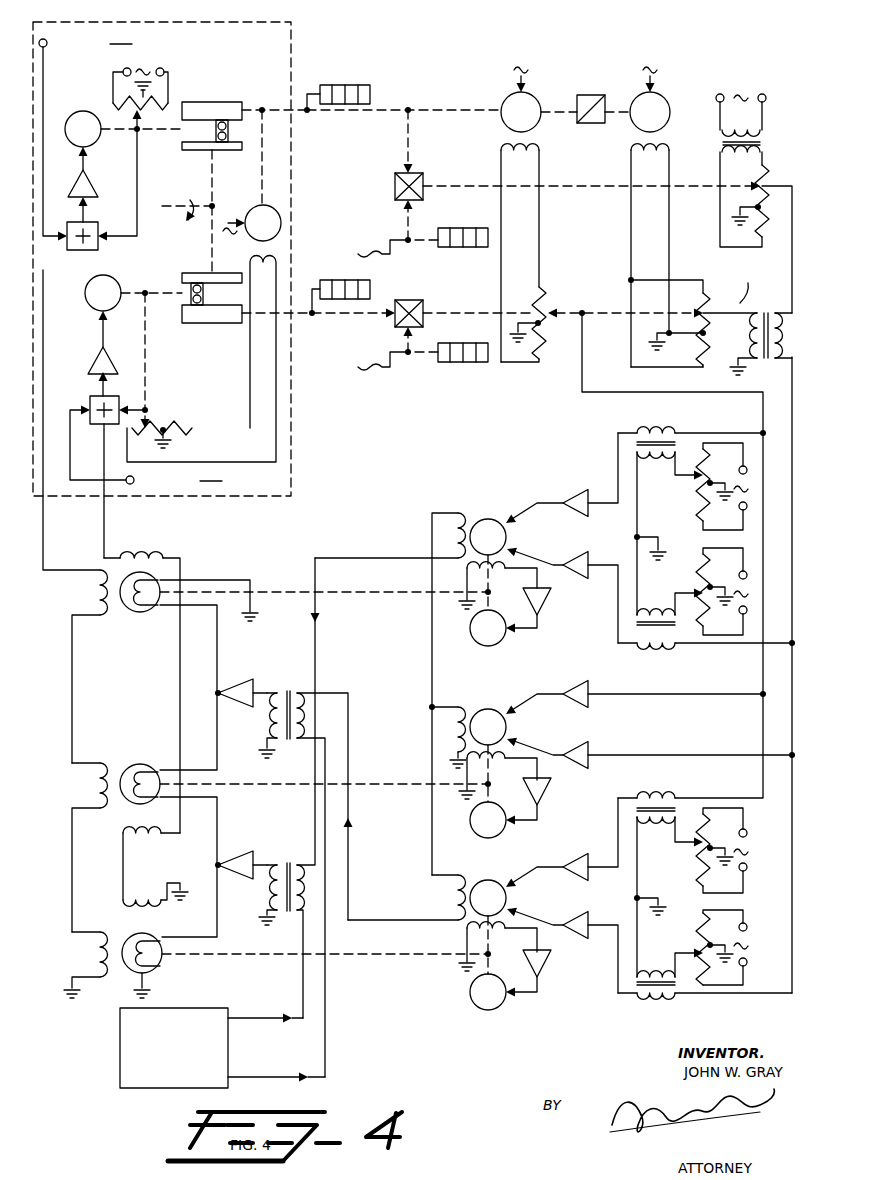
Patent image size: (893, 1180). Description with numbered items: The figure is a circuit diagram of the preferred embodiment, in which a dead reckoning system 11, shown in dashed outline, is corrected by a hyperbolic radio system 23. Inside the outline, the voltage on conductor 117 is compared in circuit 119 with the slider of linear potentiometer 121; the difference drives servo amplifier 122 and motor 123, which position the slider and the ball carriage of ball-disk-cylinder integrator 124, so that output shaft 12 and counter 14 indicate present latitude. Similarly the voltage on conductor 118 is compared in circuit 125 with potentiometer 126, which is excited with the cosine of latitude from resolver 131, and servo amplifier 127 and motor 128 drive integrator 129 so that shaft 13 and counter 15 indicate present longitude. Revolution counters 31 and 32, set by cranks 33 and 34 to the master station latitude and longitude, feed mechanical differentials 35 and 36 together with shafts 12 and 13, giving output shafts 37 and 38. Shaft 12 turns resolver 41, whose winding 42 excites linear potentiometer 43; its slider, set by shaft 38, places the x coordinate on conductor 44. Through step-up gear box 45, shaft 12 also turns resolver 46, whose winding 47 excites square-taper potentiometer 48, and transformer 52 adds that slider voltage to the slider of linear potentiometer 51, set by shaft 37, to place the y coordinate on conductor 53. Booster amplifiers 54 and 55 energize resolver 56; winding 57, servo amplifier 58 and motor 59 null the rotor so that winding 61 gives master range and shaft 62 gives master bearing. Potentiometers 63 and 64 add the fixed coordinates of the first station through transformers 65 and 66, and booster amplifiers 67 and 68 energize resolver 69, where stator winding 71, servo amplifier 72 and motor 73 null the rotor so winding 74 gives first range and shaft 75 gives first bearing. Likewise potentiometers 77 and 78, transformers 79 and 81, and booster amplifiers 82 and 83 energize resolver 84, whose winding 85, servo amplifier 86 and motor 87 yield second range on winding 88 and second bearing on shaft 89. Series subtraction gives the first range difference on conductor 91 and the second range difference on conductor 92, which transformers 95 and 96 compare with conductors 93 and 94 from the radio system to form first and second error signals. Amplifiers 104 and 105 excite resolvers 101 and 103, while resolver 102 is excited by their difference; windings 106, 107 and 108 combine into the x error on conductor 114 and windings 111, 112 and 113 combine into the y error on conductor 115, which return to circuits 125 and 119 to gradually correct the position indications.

The dead reckoning system 11 is at (287, 52).
The conductor 117 is at (43, 105).
The circuit 119 is at (96, 232).
The servo amplifier 122 is at (92, 196).
The motor 123 is at (99, 140).
The linear potentiometer 121 is at (142, 114).
The ball-disk-cylinder integrator 124 is at (200, 103).
The resolver 131 is at (254, 209).
The motor 128 is at (87, 305).
The servo amplifier 127 is at (90, 362).
The circuit 125 is at (87, 408).
The potentiometer 126 is at (172, 426).
The integrator 129 is at (205, 323).
The conductor 118 is at (68, 468).
The output shaft 12 is at (470, 112).
The counter 14 is at (372, 99).
The mechanical differential 35 is at (395, 196).
The output shaft 37 is at (588, 190).
The revolution counter 31 is at (482, 228).
The crank 33 is at (371, 252).
The counter 15 is at (370, 290).
The output shaft 13 is at (326, 321).
The mechanical differential 36 is at (395, 327).
The revolution counter 32 is at (480, 345).
The crank 34 is at (371, 364).
The resolver 41 is at (511, 94).
The step-up gear box 45 is at (603, 95).
The resolver 46 is at (661, 97).
The winding 42 is at (538, 150).
The linear potentiometer 43 is at (548, 308).
The output shaft 38 is at (527, 315).
The winding 47 is at (666, 148).
The potentiometer 48 is at (708, 330).
The linear potentiometer 51 is at (762, 183).
The conductor 53 is at (790, 461).
The transformer 52 is at (768, 360).
The conductor 44 is at (618, 392).
The transformer 65 is at (672, 434).
The potentiometer 63 is at (698, 509).
The potentiometer 64 is at (701, 549).
The transformer 66 is at (673, 644).
The booster amplifier 67 is at (590, 502).
The booster amplifier 68 is at (592, 567).
The booster amplifier 54 is at (590, 688).
The booster amplifier 55 is at (590, 718).
The booster amplifier 82 is at (590, 867).
The booster amplifier 83 is at (592, 929).
The transformer 79 is at (672, 799).
The potentiometer 77 is at (700, 878).
The potentiometer 78 is at (700, 916).
The transformer 81 is at (673, 996).
The winding 74 is at (458, 513).
The resolver 69 is at (492, 518).
The shaft 75 is at (354, 592).
The stator winding 71 is at (471, 568).
The servo amplifier 72 is at (550, 601).
The motor 73 is at (491, 646).
The winding 61 is at (458, 703).
The resolver 56 is at (492, 709).
The shaft 62 is at (398, 785).
The winding 57 is at (469, 769).
The servo amplifier 58 is at (551, 795).
The motor 59 is at (491, 838).
The winding 88 is at (458, 875).
The resolver 84 is at (492, 880).
The shaft 89 is at (402, 954).
The stator winding 85 is at (471, 933).
The servo amplifier 86 is at (551, 965).
The motor 87 is at (491, 1006).
The conductor 115 is at (43, 540).
The winding 111 is at (90, 586).
The winding 112 is at (90, 778).
The winding 113 is at (90, 947).
The conductor 114 is at (95, 542).
The winding 108 is at (142, 556).
The winding 107 is at (151, 863).
The winding 106 is at (155, 890).
The resolver 103 is at (138, 612).
The resolver 102 is at (134, 769).
The resolver 101 is at (138, 934).
The amplifier 105 is at (253, 680).
The transformer 96 is at (296, 691).
The amplifier 104 is at (253, 853).
The transformer 95 is at (295, 862).
The conductor 91 is at (314, 579).
The conductor 92 is at (368, 921).
The conductor 93 is at (302, 975).
The conductor 94 is at (325, 1005).
The hyperbolic radio system 23 is at (120, 1068).